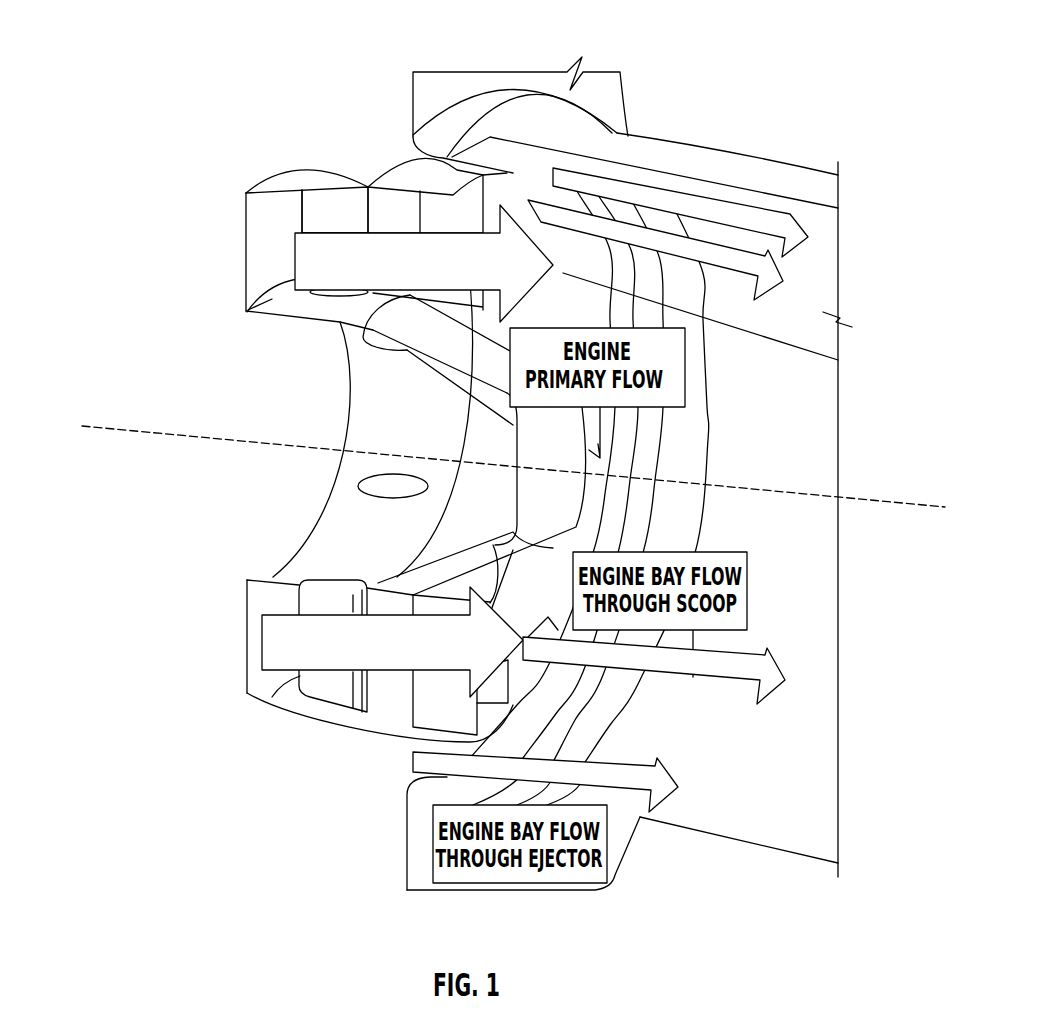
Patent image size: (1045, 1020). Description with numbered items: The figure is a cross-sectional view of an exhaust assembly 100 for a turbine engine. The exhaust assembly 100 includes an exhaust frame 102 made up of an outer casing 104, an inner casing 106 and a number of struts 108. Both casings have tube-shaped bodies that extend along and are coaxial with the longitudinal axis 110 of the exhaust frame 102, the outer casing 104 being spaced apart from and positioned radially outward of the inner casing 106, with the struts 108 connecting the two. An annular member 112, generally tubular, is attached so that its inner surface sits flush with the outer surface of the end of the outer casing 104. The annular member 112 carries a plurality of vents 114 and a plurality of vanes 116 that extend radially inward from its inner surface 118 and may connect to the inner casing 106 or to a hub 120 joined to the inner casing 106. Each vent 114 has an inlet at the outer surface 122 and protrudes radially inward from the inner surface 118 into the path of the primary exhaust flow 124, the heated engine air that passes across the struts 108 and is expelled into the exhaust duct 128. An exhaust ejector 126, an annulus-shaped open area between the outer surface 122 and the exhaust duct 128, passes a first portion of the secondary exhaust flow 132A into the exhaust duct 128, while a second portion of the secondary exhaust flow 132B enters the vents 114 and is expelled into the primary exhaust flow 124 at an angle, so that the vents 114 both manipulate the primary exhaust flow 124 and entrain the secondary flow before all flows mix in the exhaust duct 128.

The exhaust assembly 100 is at (182, 780).
The exhaust frame 102 is at (330, 178).
The outer casing 104 is at (298, 178).
The inner casing 106 is at (249, 309).
The struts 108 is at (330, 217).
The longitudinal axis 110 is at (177, 437).
The annular member 112 is at (442, 155).
The vents 114 is at (513, 177).
The vanes 116 is at (560, 330).
The inner surface 118 is at (838, 360).
The hub 120 is at (567, 445).
The outer surface 122 is at (440, 160).
The primary exhaust flow 124 is at (262, 652).
The exhaust ejector 126 is at (400, 765).
The exhaust duct 128 is at (777, 738).
The first portion of the secondary exhaust flow 132A is at (410, 806).
The second portion of the secondary exhaust flow 132B is at (693, 677).